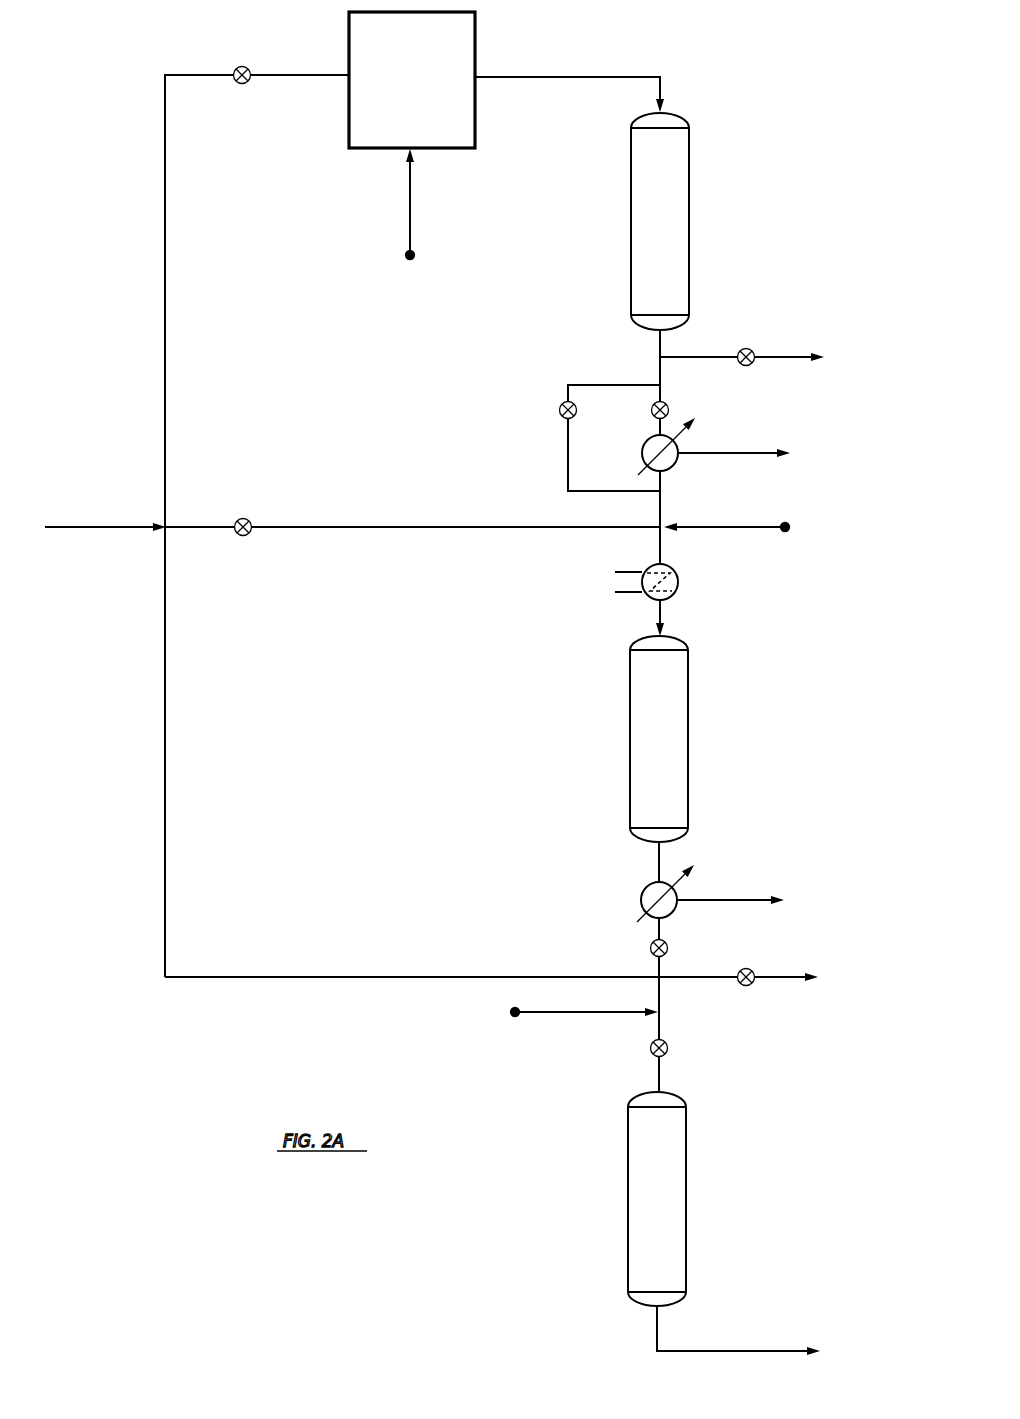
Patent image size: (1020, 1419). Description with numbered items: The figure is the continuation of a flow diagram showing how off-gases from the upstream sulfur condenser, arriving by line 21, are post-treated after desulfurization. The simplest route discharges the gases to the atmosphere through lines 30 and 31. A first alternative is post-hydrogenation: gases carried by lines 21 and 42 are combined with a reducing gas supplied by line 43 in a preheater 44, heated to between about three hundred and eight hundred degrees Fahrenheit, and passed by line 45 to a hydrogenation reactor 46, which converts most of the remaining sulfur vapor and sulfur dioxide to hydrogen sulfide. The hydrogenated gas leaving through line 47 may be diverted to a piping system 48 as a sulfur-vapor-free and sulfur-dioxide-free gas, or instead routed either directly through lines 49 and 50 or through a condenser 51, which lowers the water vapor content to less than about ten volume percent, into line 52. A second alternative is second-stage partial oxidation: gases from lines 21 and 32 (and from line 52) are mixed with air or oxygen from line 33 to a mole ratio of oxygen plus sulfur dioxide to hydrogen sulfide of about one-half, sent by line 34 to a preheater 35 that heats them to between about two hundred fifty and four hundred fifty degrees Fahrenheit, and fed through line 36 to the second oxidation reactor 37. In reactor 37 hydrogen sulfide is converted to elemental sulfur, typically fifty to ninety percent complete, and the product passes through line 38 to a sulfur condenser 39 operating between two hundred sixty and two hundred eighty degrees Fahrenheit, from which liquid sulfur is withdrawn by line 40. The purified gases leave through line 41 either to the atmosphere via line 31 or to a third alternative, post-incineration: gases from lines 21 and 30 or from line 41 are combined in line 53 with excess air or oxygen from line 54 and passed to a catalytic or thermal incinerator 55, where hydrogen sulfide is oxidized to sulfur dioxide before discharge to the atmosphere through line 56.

The line 21 is at (72, 527).
The line 30 is at (203, 977).
The line 31 is at (770, 977).
The line 32 is at (220, 527).
The line 33 is at (732, 527).
The line 34 is at (657, 537).
The preheater 35 is at (680, 586).
The line 36 is at (657, 608).
The second oxidation reactor 37 is at (702, 739).
The line 38 is at (656, 852).
The sulfur condenser 39 is at (638, 903).
The line 40 is at (735, 900).
The line 41 is at (662, 936).
The line 42 is at (165, 194).
The line 43 is at (410, 208).
The preheater 44 is at (412, 80).
The line 45 is at (536, 77).
The hydrogenation reactor 46 is at (725, 221).
The line 47 is at (658, 340).
The piping system 48 is at (770, 357).
The line 49 is at (664, 367).
The line 50 is at (568, 441).
The condenser 51 is at (645, 443).
The line 52 is at (662, 507).
The line 53 is at (662, 990).
The line 54 is at (598, 1012).
The incinerator 55 is at (708, 1199).
The line 56 is at (708, 1351).